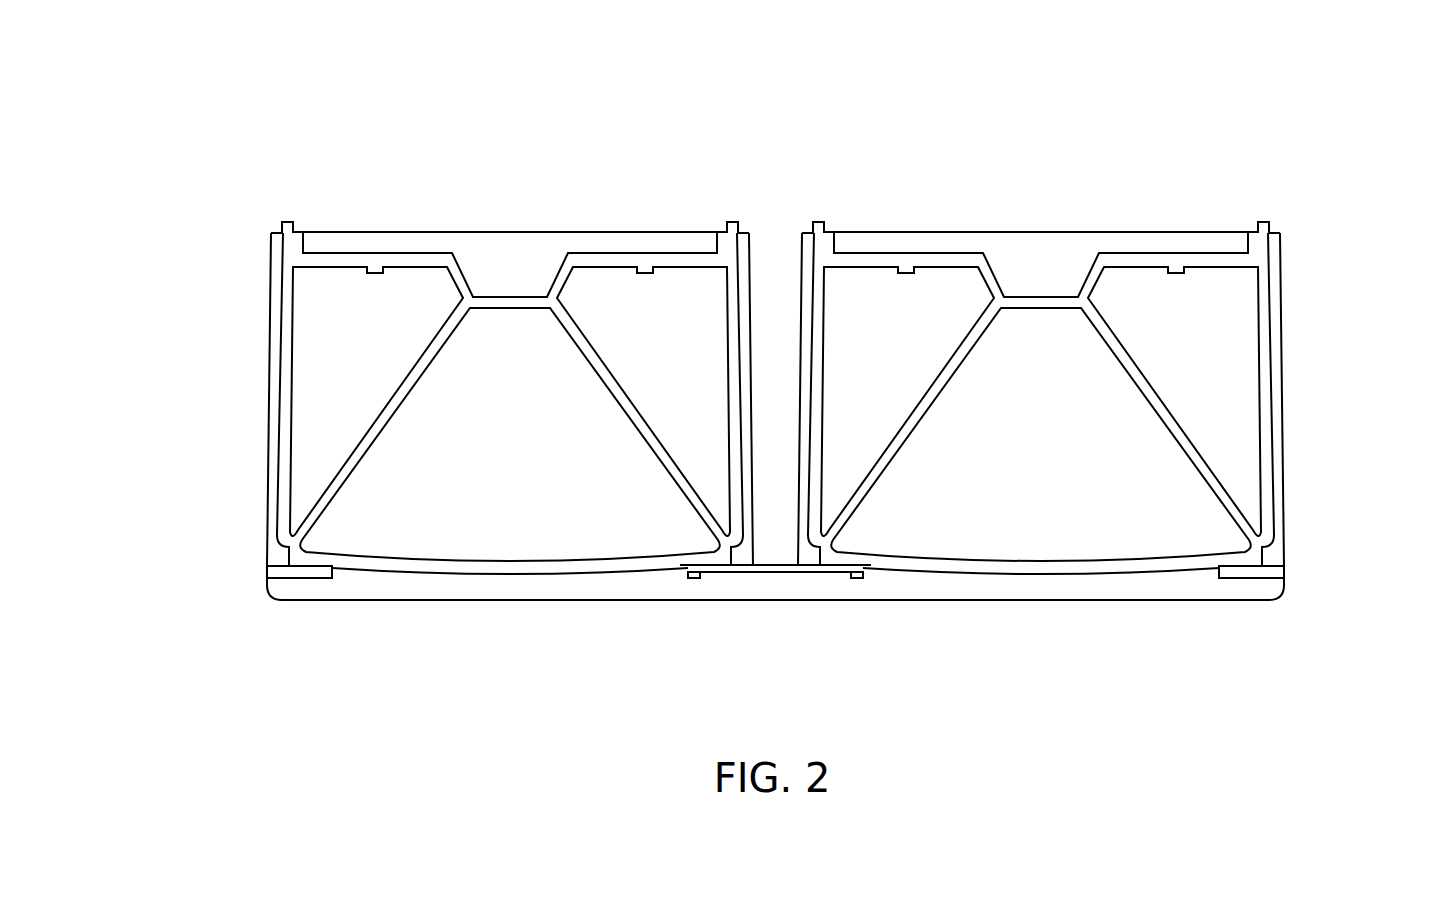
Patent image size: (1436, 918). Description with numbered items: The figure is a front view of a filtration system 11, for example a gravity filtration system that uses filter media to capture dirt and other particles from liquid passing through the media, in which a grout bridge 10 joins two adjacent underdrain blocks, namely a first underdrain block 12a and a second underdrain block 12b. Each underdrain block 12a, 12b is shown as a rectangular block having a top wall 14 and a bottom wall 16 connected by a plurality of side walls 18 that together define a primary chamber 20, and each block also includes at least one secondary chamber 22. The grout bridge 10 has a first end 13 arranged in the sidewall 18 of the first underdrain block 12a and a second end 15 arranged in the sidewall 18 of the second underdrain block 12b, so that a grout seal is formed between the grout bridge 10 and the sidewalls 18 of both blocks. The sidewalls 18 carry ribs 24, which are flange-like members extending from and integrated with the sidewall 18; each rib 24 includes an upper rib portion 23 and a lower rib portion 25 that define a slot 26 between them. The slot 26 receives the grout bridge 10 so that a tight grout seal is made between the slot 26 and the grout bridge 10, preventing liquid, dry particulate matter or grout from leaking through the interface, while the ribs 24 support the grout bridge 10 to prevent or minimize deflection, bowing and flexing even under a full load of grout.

The grout bridge 10 is at (770, 566).
The filtration system 11 is at (1228, 122).
The first underdrain block 12a is at (238, 198).
The second underdrain block 12b is at (1308, 206).
The first end 13 is at (693, 573).
The top wall 14 is at (345, 246).
The second end 15 is at (800, 580).
The bottom wall 16 is at (383, 568).
The side wall 18 is at (733, 283).
The primary chamber 20 is at (490, 475).
The secondary chamber 22 is at (355, 365).
The upper rib portion 23 is at (268, 472).
The rib 24 is at (246, 535).
The lower rib portion 25 is at (288, 597).
The slot 26 is at (268, 567).